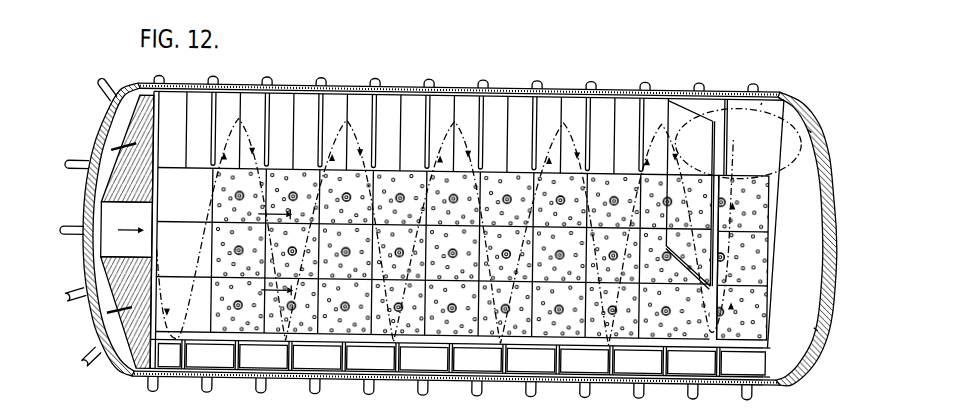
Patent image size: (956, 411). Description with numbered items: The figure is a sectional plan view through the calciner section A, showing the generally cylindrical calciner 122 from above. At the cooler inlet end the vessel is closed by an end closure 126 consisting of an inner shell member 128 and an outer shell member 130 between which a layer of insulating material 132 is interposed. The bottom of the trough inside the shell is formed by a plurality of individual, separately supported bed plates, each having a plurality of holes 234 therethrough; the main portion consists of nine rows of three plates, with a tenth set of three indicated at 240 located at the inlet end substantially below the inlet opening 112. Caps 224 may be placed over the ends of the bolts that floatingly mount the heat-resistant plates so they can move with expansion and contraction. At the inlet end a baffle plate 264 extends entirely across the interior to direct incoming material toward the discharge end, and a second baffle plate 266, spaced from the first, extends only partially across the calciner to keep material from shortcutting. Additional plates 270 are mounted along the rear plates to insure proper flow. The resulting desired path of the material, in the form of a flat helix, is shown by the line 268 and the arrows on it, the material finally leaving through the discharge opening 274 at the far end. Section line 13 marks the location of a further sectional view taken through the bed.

The calciner 122 is at (456, 88).
The end closure 126 is at (829, 176).
The discharge opening 274 is at (148, 212).
The flow path line 268 is at (203, 271).
The caps 224 is at (78, 164).
The additional plates 270 is at (268, 98).
The holes 234 is at (457, 335).
The baffle plate 264 is at (806, 265).
The second baffle plate 266 is at (707, 146).
The inner shell member 128 is at (811, 291).
The tenth set of bed plates 240 is at (767, 236).
The calciner section A is at (624, 88).
The section line 13- 13 is at (266, 252).
The inlet opening 112 is at (759, 101).
The layer of insulating material 132 is at (809, 126).
The outer shell member 130 is at (817, 324).